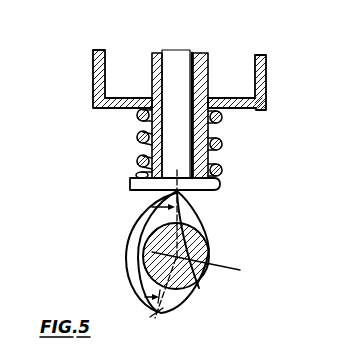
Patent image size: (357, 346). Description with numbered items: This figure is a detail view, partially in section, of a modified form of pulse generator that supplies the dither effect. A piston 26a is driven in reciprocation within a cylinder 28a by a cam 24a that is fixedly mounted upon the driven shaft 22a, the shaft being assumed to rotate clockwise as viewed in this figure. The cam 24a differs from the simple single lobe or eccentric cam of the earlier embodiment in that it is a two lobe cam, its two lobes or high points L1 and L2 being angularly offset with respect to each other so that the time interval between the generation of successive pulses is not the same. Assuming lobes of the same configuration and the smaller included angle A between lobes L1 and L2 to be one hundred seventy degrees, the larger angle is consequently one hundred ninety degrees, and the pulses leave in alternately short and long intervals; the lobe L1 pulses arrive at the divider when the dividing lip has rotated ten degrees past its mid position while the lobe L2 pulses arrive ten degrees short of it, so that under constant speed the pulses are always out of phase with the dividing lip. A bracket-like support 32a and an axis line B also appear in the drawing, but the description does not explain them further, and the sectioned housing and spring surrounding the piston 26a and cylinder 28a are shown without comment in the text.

The driven shaft 22a is at (194, 287).
The cam 24a is at (198, 219).
The piston 26a is at (193, 54).
The cylinder 28a is at (157, 70).
The bracket 32a is at (266, 87).
The lobe L1 is at (166, 197).
The lobe L2 is at (161, 313).
The included angle A is at (126, 259).
The axis B is at (224, 262).